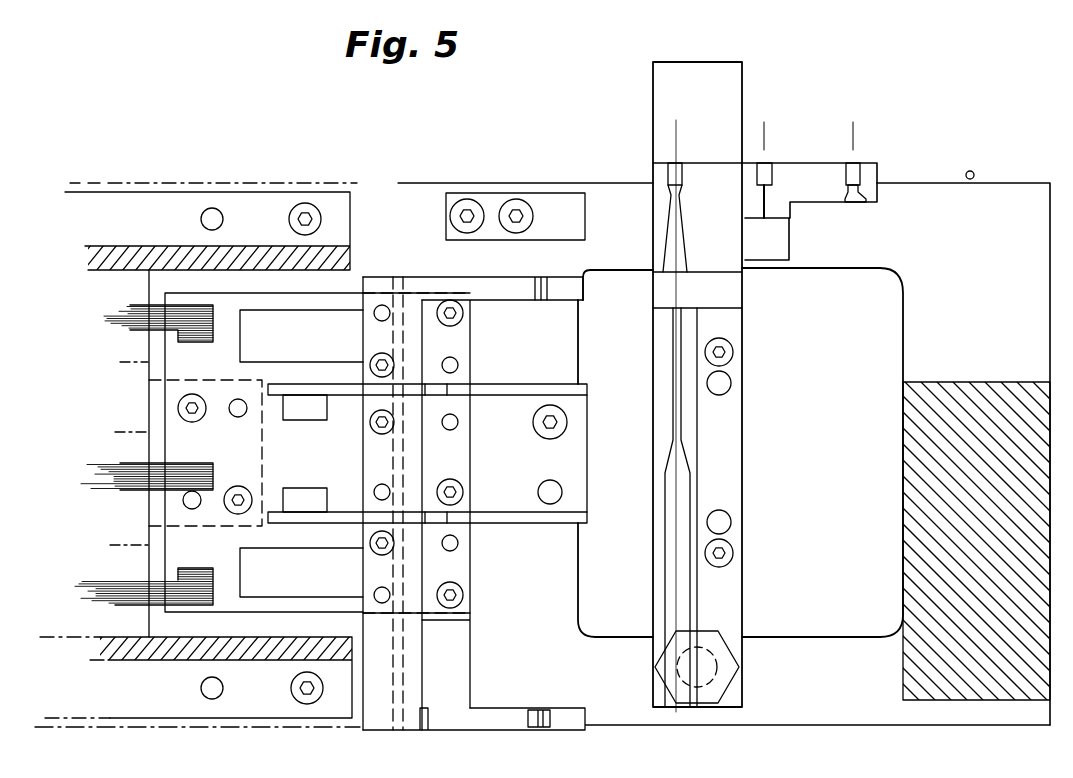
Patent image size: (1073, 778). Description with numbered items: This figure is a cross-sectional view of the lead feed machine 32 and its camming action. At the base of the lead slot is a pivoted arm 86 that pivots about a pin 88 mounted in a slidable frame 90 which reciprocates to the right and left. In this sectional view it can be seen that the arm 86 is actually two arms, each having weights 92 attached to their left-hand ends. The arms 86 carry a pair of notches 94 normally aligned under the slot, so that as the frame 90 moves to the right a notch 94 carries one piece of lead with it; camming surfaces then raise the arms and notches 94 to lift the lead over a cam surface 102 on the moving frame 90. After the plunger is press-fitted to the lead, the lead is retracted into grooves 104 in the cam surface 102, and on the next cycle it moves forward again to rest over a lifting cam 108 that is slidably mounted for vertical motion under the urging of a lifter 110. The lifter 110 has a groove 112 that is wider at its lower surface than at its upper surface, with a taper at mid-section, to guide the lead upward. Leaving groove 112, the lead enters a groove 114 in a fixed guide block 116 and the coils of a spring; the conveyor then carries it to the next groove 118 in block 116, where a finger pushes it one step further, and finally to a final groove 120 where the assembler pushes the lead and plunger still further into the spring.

The lead feed machine 32 is at (473, 175).
The pivoted arm 86 is at (330, 398).
The pin 88 is at (400, 725).
The slidable frame 90 is at (373, 725).
The weights 92 is at (287, 407).
The notches 94 is at (435, 523).
The cam surface 102 is at (507, 726).
The grooves 104 is at (537, 276).
The lifting cam 108 is at (728, 460).
The lifter 110 is at (663, 102).
The groove 112 is at (680, 597).
The groove 114 is at (683, 258).
The fixed guide block 116 is at (871, 173).
The groove 118 is at (769, 177).
The final groove 120 is at (857, 158).